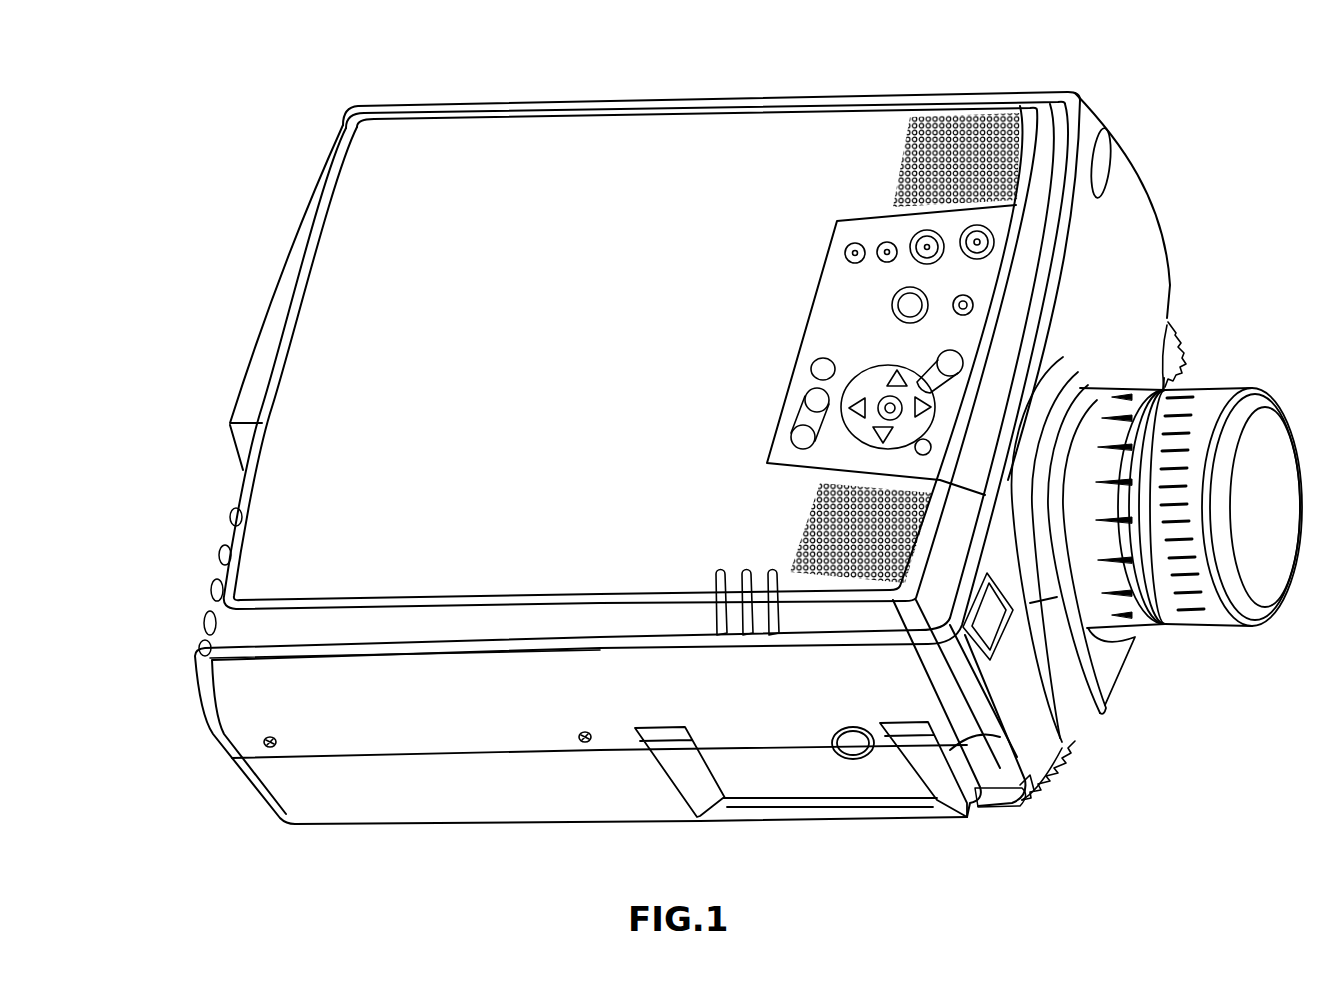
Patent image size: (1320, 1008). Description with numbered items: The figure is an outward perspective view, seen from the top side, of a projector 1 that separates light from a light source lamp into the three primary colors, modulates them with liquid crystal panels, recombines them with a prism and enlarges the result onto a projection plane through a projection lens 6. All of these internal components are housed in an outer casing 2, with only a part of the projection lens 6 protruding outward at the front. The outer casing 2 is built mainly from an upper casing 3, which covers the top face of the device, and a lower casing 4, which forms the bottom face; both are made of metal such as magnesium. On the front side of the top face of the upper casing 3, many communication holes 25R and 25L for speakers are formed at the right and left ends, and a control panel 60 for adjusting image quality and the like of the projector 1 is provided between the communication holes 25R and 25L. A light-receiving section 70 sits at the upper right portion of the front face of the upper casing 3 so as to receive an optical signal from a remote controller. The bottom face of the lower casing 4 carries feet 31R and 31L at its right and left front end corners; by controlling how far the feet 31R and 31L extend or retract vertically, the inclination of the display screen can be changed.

The projector 1 is at (316, 106).
The outer casing 2 is at (225, 790).
The upper casing 3 is at (233, 713).
The lower casing 4 is at (273, 784).
The projection lens 6 is at (1186, 390).
The communication holes 25L is at (908, 145).
The communication holes 25R is at (815, 500).
The foot 31L is at (1184, 332).
The foot 31R is at (1060, 791).
The control panel 60 is at (848, 293).
The light-receiving section 70 is at (1104, 178).